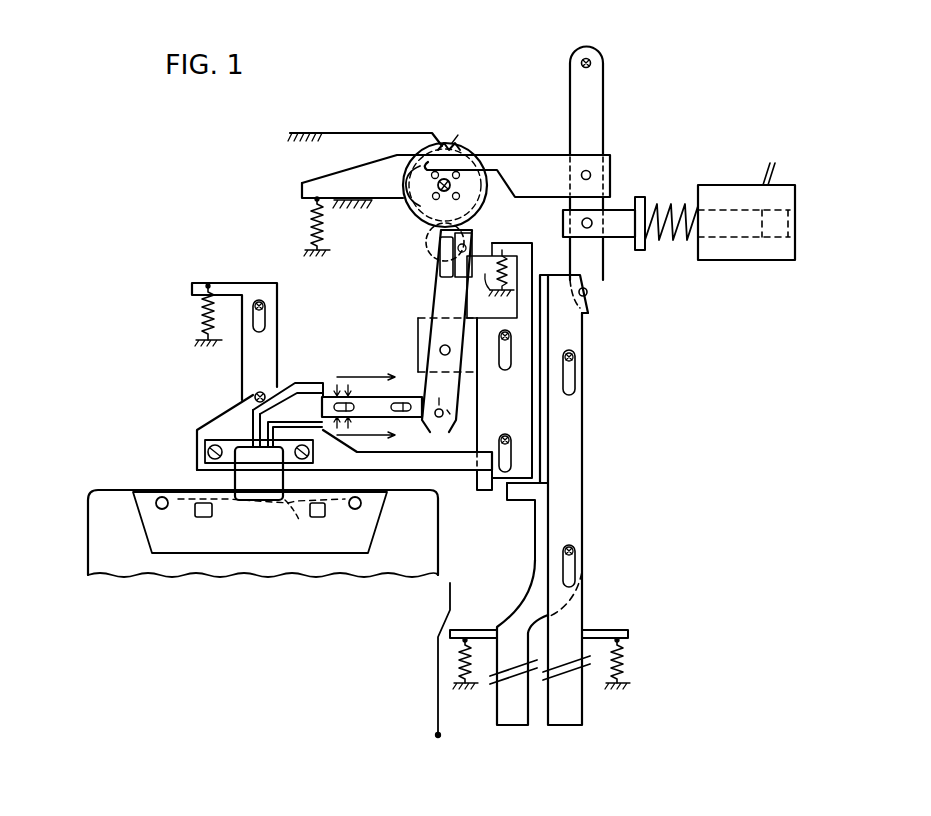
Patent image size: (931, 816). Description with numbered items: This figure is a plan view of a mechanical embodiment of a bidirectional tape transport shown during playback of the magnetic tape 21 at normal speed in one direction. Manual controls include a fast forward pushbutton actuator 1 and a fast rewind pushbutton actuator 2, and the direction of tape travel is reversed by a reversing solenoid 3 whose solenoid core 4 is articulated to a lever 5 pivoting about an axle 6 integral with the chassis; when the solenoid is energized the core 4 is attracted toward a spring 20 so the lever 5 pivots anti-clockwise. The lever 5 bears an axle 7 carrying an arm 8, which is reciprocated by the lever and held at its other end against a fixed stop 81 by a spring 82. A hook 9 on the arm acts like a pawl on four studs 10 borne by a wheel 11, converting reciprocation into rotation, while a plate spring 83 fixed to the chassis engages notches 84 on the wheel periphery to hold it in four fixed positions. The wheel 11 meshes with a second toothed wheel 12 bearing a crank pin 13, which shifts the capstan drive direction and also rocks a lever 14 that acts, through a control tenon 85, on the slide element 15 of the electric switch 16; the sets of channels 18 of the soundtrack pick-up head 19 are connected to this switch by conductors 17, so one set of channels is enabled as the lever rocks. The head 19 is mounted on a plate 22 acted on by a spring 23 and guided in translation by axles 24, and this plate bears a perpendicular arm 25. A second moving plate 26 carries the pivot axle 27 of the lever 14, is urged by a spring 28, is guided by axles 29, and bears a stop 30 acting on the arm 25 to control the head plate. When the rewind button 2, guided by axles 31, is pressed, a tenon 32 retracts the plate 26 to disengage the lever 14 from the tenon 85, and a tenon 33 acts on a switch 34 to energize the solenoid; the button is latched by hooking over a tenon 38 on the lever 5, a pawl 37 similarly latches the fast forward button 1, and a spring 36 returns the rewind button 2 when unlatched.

The fast forward pushbutton actuator 1 is at (586, 482).
The fast rewind pushbutton actuator 2 is at (512, 728).
The reversing solenoid 3 is at (737, 258).
The solenoid core 4 is at (620, 238).
The lever 5 is at (604, 113).
The axle 6 is at (591, 63).
The axle 7 is at (591, 174).
The arm 8 is at (531, 162).
The hook 9 is at (418, 197).
The studs 10 is at (462, 176).
The wheel 11 is at (424, 232).
The second toothed wheel 12 is at (436, 254).
The crank pin 13 is at (466, 252).
The lever 14 is at (436, 300).
The slide element 15 is at (374, 396).
The switch means 16 is at (336, 384).
The conductors 17 is at (298, 385).
The sets of channels 18 is at (210, 452).
The soundtrack pick-up head 19 is at (264, 488).
The spring 20 is at (670, 200).
The magnetic tape 21 is at (306, 500).
The plate 22 is at (208, 426).
The spring 23 is at (204, 312).
The axles 24 is at (264, 306).
The arm 25 is at (448, 462).
The second moving plate 26 is at (513, 392).
The pivot axle 27 is at (440, 347).
The spring 28 is at (499, 360).
The axles 29 is at (496, 334).
The stop 30 is at (484, 492).
The axles 31 is at (574, 358).
The tenon 32 is at (505, 502).
The tenon 33 is at (480, 630).
The switch 34 is at (448, 598).
The spring 36 is at (458, 656).
The pawl 37 is at (590, 316).
The tenon 38 is at (590, 292).
The fixed stop 81 is at (352, 208).
The spring 82 is at (314, 226).
The plate spring 83 is at (357, 133).
The notches 84 is at (450, 144).
The control tenon 85 is at (440, 418).